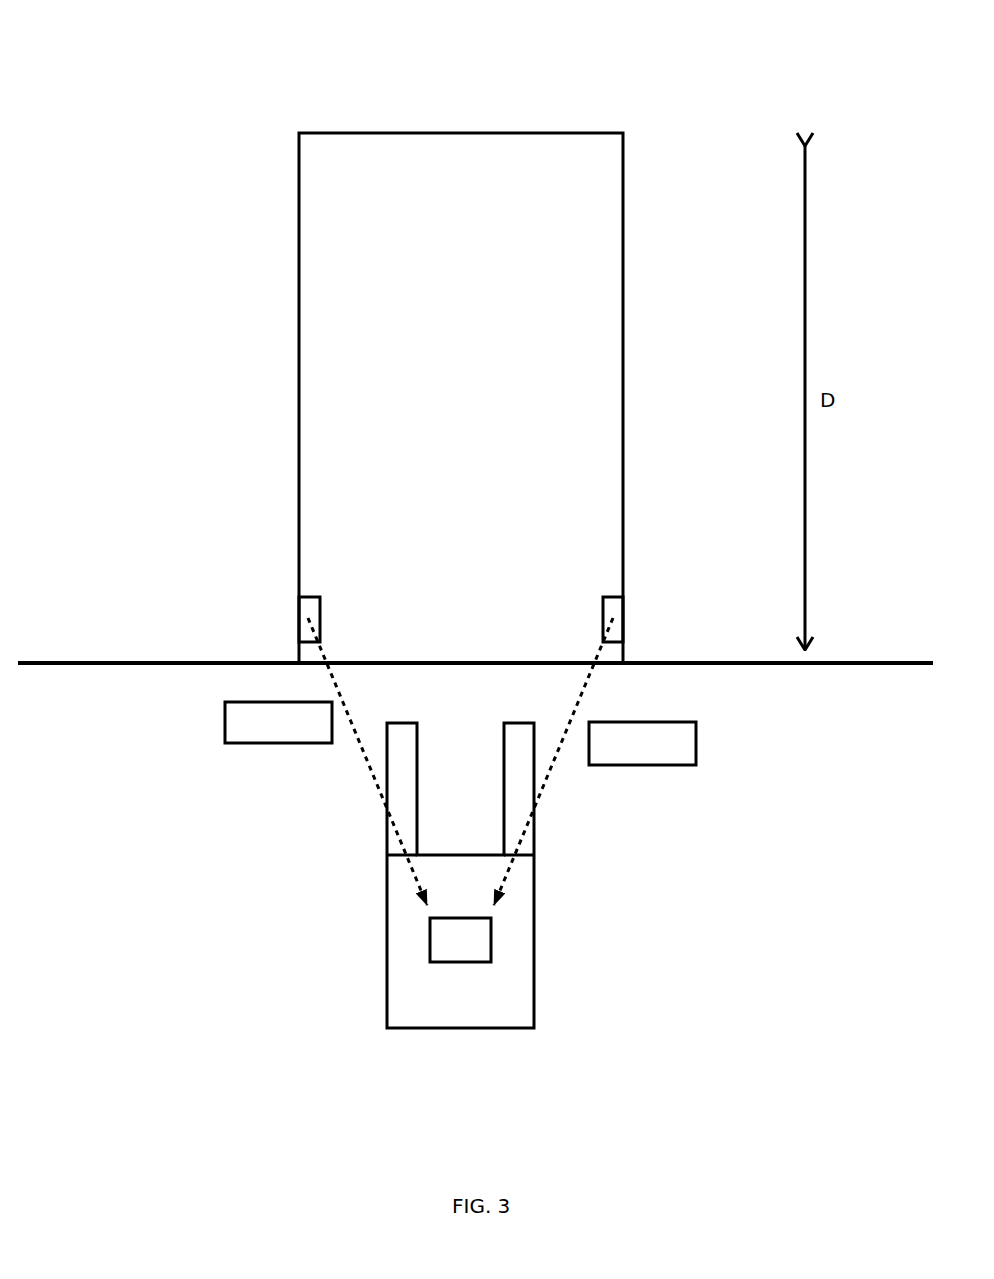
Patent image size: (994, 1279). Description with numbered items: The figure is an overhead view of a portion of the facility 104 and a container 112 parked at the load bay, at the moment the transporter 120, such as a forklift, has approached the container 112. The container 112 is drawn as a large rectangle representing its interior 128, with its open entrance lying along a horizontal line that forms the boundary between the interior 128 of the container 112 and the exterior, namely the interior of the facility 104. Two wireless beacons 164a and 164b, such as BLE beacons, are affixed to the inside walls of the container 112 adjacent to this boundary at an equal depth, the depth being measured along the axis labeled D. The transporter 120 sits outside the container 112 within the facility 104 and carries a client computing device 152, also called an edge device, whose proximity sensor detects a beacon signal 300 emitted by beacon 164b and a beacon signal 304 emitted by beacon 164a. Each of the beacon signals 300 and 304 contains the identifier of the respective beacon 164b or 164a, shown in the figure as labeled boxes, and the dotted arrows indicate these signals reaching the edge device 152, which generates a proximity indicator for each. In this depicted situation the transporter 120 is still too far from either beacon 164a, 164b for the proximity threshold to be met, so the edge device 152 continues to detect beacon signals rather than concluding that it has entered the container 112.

The facility 104 is at (75, 909).
The container 112 is at (459, 334).
The interior 128 is at (452, 250).
The beacon 164a is at (626, 620).
The beacon 164b is at (297, 619).
The transporter 120 is at (534, 894).
The client computing device 152 is at (479, 956).
The beacon signal 300 is at (225, 720).
The beacon signal 304 is at (700, 743).